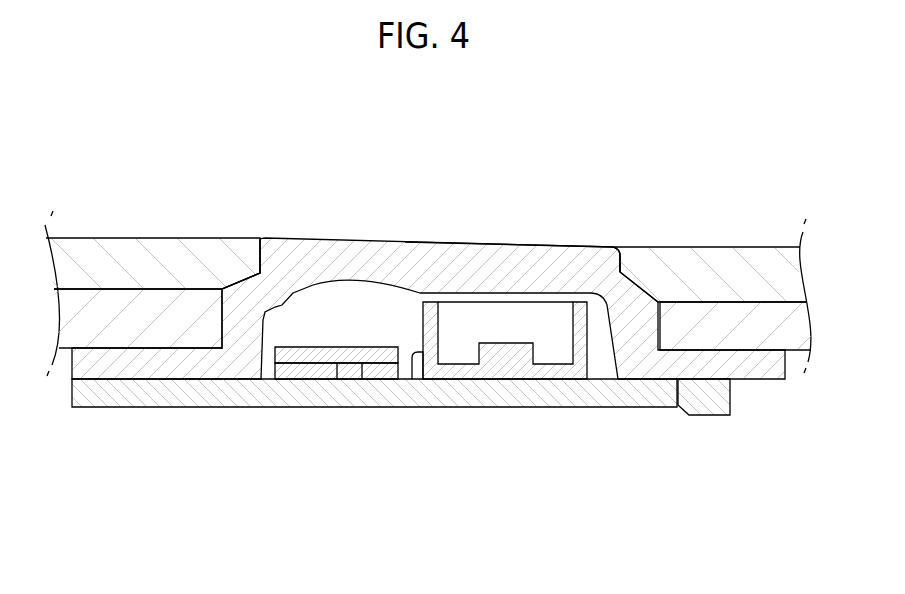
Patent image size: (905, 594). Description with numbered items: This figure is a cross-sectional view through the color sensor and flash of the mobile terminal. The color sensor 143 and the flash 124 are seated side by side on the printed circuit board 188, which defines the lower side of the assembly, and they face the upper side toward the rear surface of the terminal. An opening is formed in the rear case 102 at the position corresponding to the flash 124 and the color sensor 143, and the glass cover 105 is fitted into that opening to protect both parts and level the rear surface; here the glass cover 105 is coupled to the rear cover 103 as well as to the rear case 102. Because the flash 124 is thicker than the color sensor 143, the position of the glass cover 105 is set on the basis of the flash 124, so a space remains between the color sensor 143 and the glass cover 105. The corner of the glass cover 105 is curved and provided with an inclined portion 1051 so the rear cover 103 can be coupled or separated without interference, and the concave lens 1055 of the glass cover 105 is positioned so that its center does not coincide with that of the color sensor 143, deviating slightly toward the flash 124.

The inclined portion 1051 is at (242, 280).
The concave lens 1055 is at (378, 283).
The glass cover 105 is at (533, 255).
The rear cover 103 is at (703, 255).
The rear case 102 is at (748, 340).
The color sensor 143 is at (315, 363).
The flash 124 is at (520, 375).
The printed circuit board 188 is at (200, 402).